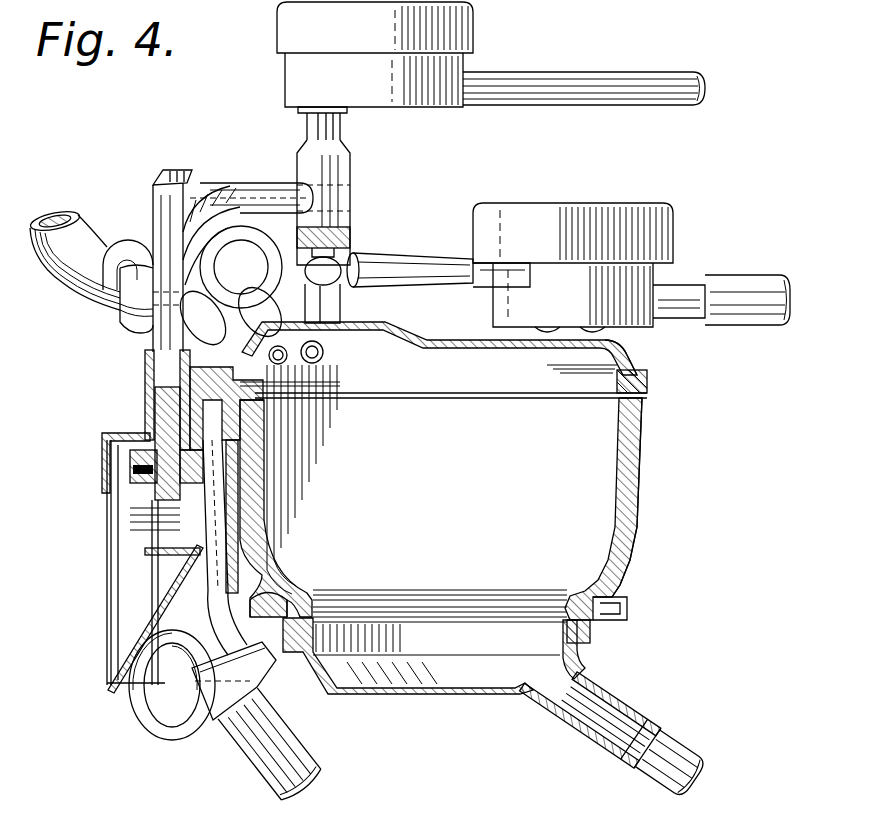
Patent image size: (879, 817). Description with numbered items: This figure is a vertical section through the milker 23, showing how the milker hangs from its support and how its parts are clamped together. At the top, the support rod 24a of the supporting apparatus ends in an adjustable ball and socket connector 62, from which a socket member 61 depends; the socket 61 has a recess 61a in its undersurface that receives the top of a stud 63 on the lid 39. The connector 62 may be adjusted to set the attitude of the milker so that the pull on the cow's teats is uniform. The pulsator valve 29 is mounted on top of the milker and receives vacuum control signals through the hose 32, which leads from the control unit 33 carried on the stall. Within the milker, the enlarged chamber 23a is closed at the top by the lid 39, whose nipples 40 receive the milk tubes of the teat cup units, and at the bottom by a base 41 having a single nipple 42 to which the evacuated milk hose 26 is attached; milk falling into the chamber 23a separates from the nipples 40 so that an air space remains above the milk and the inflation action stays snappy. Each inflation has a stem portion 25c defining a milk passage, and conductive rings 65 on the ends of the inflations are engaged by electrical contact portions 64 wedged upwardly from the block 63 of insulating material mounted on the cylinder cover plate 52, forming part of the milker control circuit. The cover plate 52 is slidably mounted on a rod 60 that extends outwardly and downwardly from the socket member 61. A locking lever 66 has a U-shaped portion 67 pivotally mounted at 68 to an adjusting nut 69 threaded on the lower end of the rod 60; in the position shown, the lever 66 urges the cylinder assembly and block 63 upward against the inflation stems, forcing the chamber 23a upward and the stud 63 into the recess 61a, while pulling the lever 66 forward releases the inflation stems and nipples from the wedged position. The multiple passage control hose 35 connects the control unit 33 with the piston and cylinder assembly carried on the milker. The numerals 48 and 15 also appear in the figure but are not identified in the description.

The adjustable ball and socket connector 62 is at (470, 29).
The support rod 24a is at (630, 80).
The socket member 61 is at (350, 182).
The recess 61a is at (344, 276).
The pulsator valve 29 is at (628, 218).
The hose 32 is at (404, 268).
The stud 63 is at (344, 314).
The lid 39 is at (623, 345).
The milker 23 is at (637, 494).
The enlarged chamber 23a is at (616, 460).
The control unit 33 is at (637, 527).
The base 41 is at (577, 662).
The nipple 42 is at (560, 712).
The milk hose 26 is at (692, 753).
The nipples 40 is at (322, 360).
The rod 60 is at (152, 232).
The conductive rings 65 is at (272, 282).
The fitting 48 is at (110, 247).
The stem portion 25c is at (101, 222).
The electrical contact portions 64 is at (150, 362).
The cylinder cover plate 52 is at (100, 470).
The pivot 68 is at (150, 493).
The U-shaped portion 67 is at (150, 520).
The adjusting nut 69 is at (197, 490).
The locking lever 66 is at (161, 582).
The multiple passage control hose 35 is at (320, 765).
The section line 15 is at (227, 790).